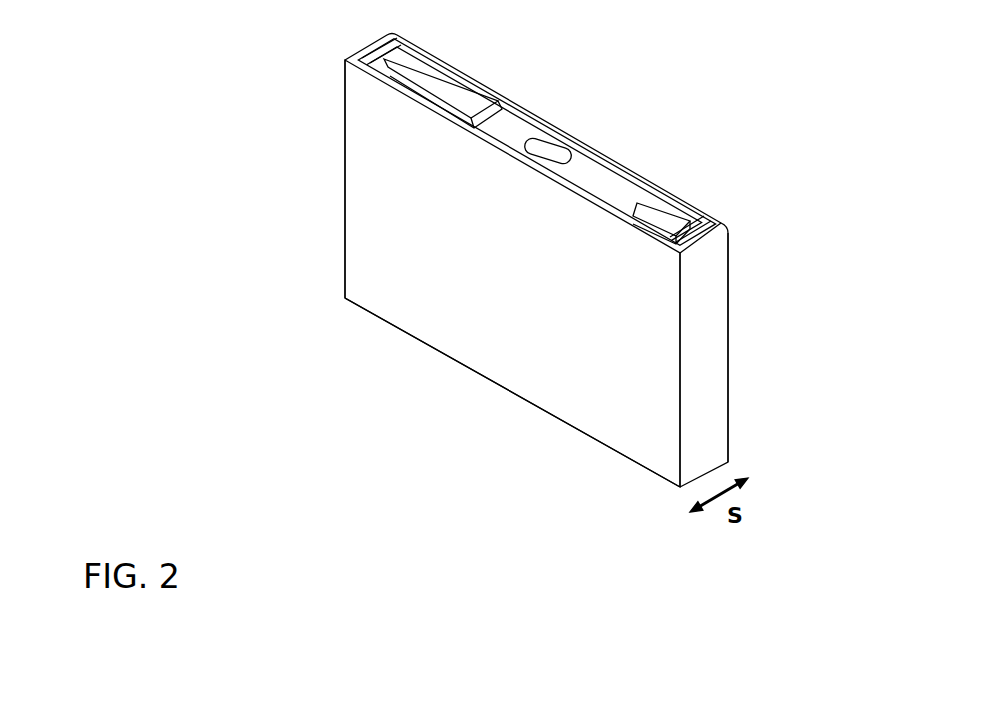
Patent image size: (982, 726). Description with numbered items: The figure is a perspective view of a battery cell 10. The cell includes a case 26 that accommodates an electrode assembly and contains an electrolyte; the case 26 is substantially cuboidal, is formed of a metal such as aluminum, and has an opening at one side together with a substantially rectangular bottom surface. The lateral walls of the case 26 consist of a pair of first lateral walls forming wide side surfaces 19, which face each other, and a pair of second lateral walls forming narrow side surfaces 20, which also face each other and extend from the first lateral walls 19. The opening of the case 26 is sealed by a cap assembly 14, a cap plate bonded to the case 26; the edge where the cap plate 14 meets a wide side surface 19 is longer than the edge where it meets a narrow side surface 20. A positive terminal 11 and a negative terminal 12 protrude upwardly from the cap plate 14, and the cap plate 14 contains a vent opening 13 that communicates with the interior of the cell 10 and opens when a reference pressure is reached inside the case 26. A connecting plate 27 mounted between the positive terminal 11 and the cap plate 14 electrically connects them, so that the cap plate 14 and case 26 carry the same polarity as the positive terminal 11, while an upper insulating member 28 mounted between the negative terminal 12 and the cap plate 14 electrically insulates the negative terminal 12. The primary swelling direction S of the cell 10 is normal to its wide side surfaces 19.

The battery cell 10 is at (568, 48).
The positive terminal 11 is at (688, 199).
The negative terminal 12 is at (452, 75).
The vent opening 13 is at (551, 135).
The cap assembly 14 is at (518, 125).
The wide side surfaces 19 is at (733, 279).
The narrow side surfaces 20 is at (345, 215).
The case 26 is at (493, 363).
The connecting plate 27 is at (703, 209).
The upper insulating member 28 is at (375, 47).